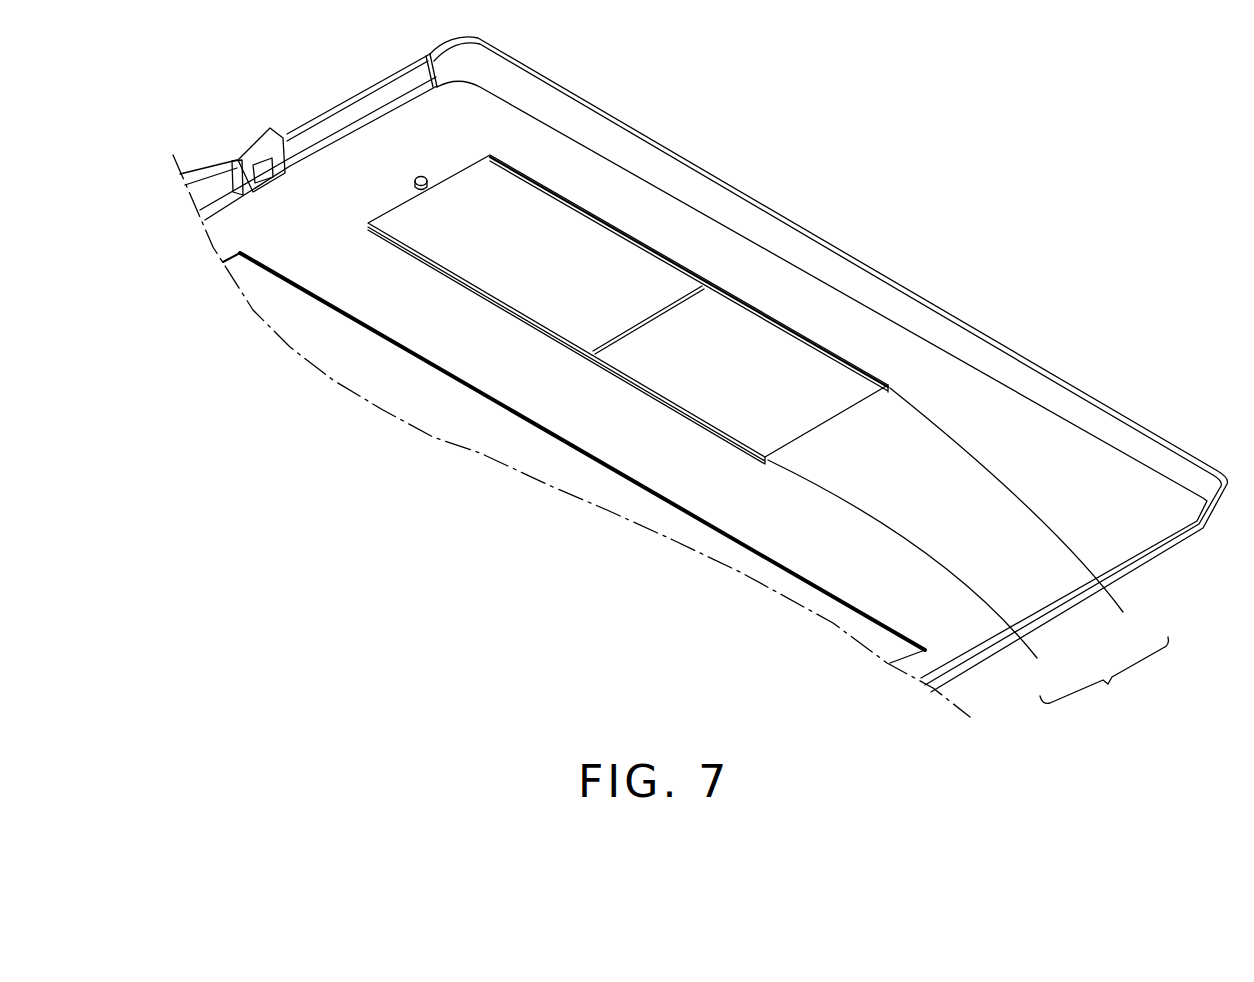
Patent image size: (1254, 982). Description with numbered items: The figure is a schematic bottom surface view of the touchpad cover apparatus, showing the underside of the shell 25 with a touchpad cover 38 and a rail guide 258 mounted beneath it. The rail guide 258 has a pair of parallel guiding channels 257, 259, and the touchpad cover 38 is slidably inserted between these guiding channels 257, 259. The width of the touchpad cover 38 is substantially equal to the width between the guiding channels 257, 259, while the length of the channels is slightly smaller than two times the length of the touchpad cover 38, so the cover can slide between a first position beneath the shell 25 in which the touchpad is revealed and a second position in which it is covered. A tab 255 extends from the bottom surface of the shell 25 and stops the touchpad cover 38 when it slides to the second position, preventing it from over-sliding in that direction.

The shell 25 is at (1023, 453).
The touchpad cover 38 is at (590, 268).
The tab 255 is at (427, 180).
The guiding channel 257 is at (1025, 519).
The guiding channel 259 is at (919, 577).
The rail guide 258 is at (1104, 679).